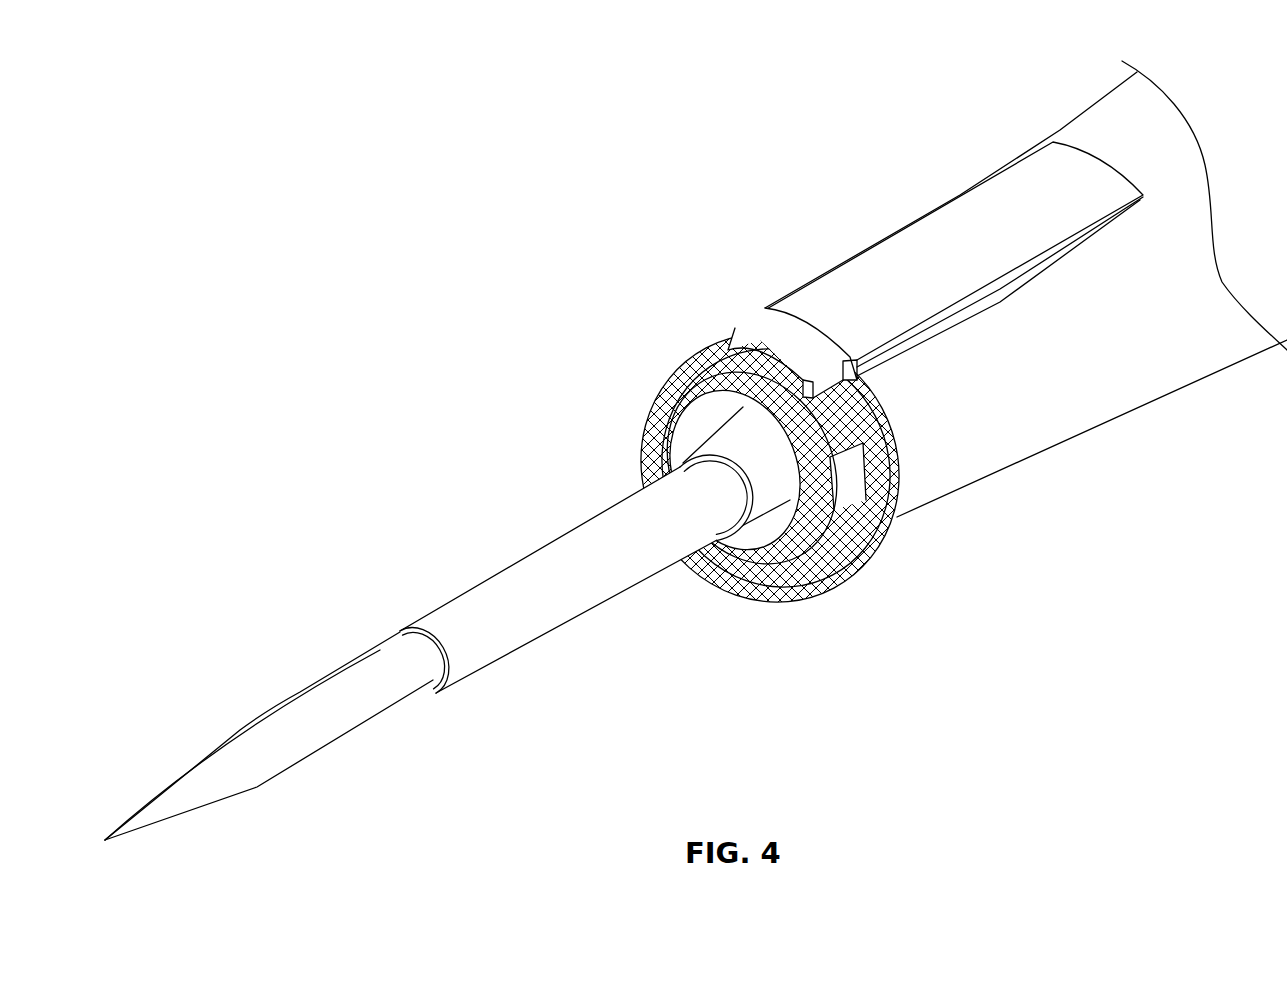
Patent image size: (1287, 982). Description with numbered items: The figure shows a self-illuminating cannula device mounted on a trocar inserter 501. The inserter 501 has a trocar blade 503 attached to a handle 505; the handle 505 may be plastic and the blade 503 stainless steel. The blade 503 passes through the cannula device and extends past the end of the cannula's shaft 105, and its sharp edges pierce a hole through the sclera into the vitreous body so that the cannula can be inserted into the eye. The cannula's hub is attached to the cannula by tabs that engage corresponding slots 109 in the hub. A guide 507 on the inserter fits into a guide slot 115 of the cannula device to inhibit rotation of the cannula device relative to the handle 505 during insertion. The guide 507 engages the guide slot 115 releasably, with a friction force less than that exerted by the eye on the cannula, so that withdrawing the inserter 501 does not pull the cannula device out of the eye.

The trocar inserter 501 is at (470, 386).
The trocar blade 503 is at (311, 683).
The shaft 105 is at (593, 540).
The slots 109 is at (862, 562).
The guide slot 115 is at (723, 333).
The guide 507 is at (908, 248).
The handle 505 is at (1148, 372).